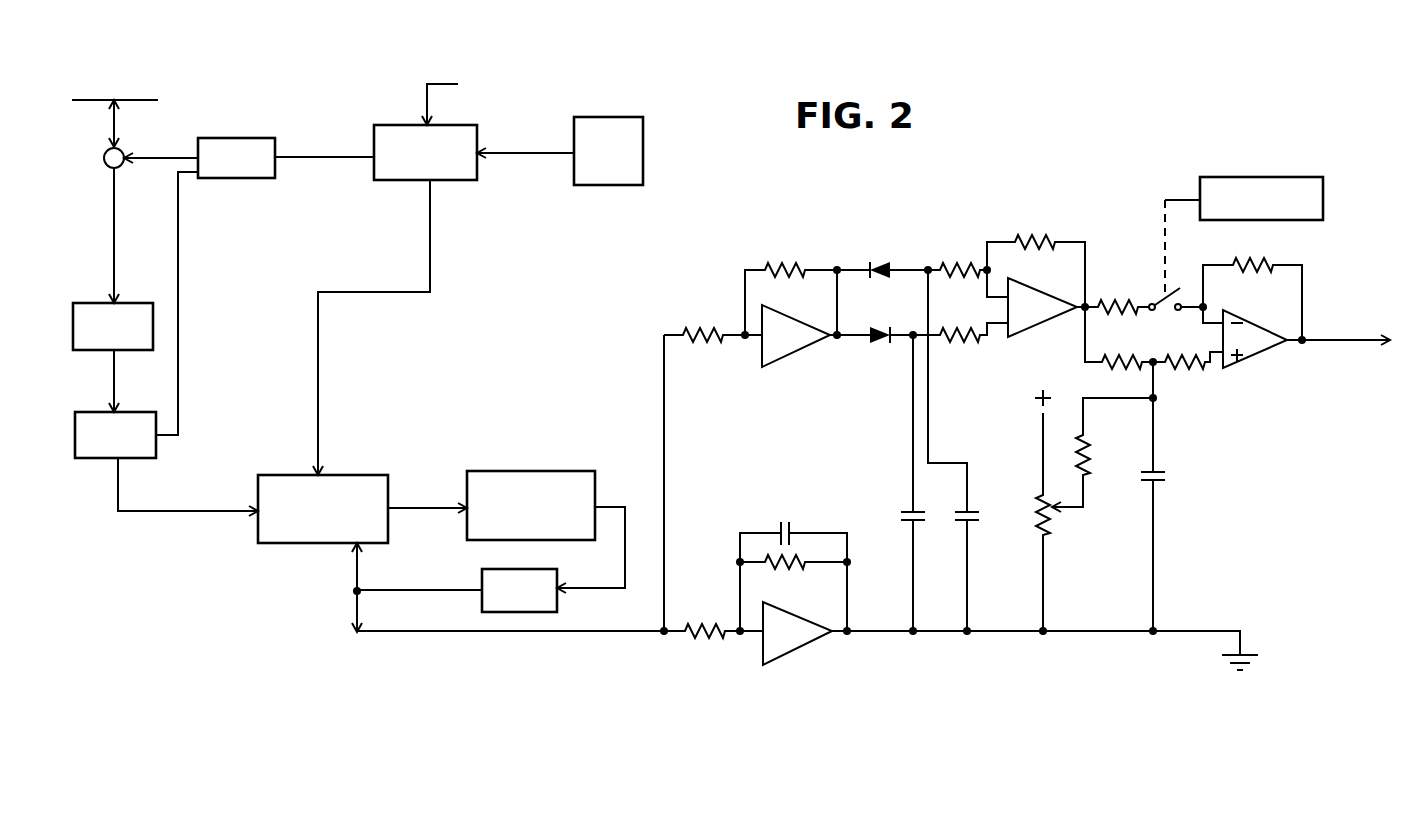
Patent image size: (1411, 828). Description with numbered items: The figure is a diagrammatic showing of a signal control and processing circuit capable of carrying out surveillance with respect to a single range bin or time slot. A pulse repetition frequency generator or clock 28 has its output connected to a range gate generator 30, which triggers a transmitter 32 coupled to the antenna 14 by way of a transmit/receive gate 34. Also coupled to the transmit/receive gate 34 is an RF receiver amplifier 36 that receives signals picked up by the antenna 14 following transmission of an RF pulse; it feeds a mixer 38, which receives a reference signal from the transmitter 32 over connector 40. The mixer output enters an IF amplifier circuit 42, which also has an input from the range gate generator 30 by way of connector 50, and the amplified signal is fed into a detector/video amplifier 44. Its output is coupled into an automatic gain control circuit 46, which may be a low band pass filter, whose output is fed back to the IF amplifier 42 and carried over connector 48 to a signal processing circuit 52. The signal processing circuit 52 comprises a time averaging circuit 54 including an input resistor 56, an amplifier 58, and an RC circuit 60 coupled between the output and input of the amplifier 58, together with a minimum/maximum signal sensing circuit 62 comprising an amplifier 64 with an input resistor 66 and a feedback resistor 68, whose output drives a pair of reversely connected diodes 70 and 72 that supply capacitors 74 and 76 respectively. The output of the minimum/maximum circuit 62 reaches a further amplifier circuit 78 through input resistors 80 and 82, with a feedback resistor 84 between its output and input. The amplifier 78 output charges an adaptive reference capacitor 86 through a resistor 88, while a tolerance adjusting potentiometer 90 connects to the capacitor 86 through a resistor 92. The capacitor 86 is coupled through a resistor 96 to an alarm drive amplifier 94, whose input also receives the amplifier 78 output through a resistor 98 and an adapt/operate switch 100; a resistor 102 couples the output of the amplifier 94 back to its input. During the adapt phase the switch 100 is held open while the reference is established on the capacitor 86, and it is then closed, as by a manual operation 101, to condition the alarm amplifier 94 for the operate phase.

The antenna 14 is at (165, 93).
The pulse repetition frequency generator 28 is at (630, 117).
The range gate generator 30 is at (453, 180).
The transmitter 32 is at (236, 138).
The transmit/receive gate 34 is at (104, 161).
The RF receiver amplifier 36 is at (95, 303).
The mixer 38 is at (90, 458).
The connector 40 is at (178, 365).
The IF amplifier circuit 42 is at (287, 545).
The detector/video amplifier 44 is at (517, 471).
The automatic gain control circuit 46 is at (482, 576).
The connector 48 is at (408, 635).
The connector 50 is at (318, 370).
The signal processing circuit 52 is at (751, 462).
The time averaging circuit 54 is at (819, 606).
The input resistor 56 is at (706, 625).
The amplifier 58 is at (800, 650).
The RC circuit 60 is at (809, 545).
The minimum/maximum signal sensing circuit 62 is at (893, 312).
The amplifier 64 is at (795, 360).
The input resistor 66 is at (701, 328).
The feedback resistor 68 is at (785, 262).
The diode 70 is at (882, 262).
The diode 72 is at (880, 343).
The capacitor 74 is at (968, 512).
The capacitor 76 is at (905, 512).
The amplifier circuit 78 is at (1040, 328).
The input resistor 80 is at (960, 262).
The input resistor 82 is at (960, 343).
The feedback resistor 84 is at (1035, 242).
The adaptive reference capacitor 86 is at (1160, 472).
The resistor 88 is at (1108, 362).
The tolerance adjusting potentiometer 90 is at (1058, 530).
The resistor 92 is at (1088, 448).
The alarm drive amplifier 94 is at (1262, 330).
The resistor 96 is at (1190, 368).
The resistor 98 is at (1115, 300).
The adapt/operate switch 100 is at (1163, 312).
The manual operation 101 is at (1255, 177).
The resistor 102 is at (1250, 265).